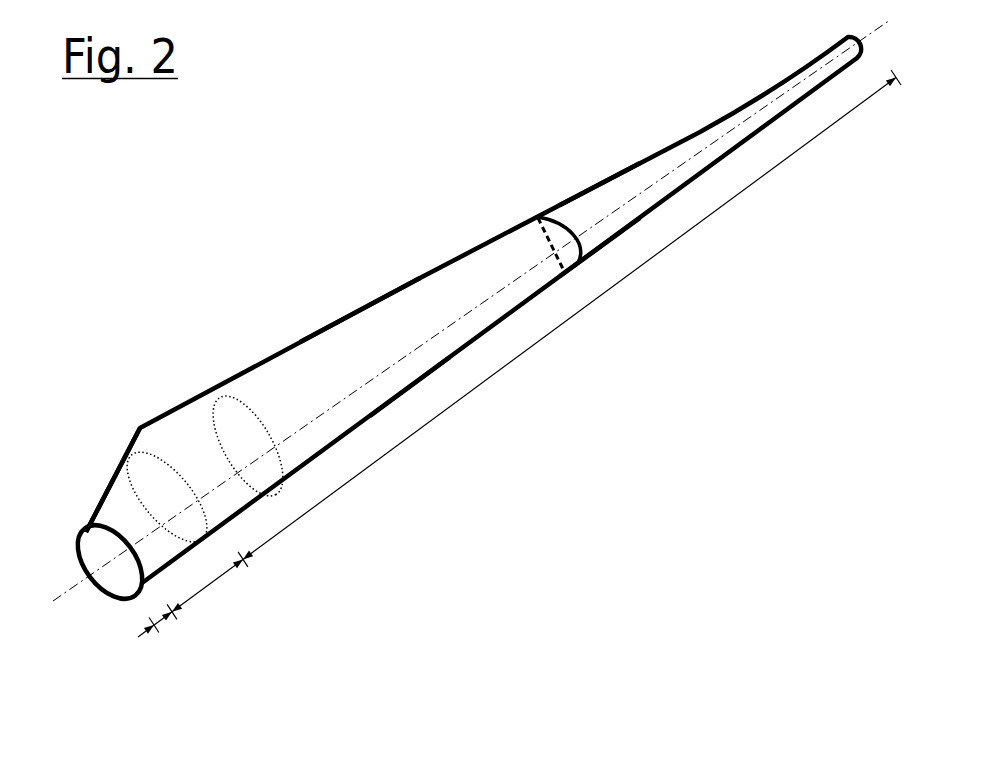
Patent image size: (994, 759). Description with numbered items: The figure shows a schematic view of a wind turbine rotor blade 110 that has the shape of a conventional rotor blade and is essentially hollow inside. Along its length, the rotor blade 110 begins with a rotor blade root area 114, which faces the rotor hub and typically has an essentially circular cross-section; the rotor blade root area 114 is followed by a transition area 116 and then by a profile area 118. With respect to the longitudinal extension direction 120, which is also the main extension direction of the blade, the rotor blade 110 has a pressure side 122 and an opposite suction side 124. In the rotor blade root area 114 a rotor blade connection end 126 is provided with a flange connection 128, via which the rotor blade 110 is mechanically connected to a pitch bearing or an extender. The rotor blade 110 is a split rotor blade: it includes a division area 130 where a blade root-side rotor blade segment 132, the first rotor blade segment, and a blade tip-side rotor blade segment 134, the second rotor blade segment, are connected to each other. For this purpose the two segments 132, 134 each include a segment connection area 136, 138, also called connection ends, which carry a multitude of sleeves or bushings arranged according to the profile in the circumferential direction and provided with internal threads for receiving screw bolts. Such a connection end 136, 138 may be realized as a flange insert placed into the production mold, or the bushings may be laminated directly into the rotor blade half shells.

The wind turbine rotor blade 110 is at (552, 463).
The rotor blade root area 114 is at (173, 610).
The transition area 116 is at (218, 582).
The profile area 118 is at (553, 333).
The longitudinal extension direction 120 is at (405, 398).
The pressure side 122 is at (597, 200).
The suction side 124 is at (387, 270).
The rotor blade connection end 126 is at (115, 570).
The flange connection 128 is at (88, 557).
The division area 130 is at (595, 255).
The blade root-side rotor blade segment 132 is at (333, 363).
The blade tip-side rotor blade segment 134 is at (700, 153).
The segment connection area 136 is at (538, 217).
The segment connection area 138 is at (553, 238).